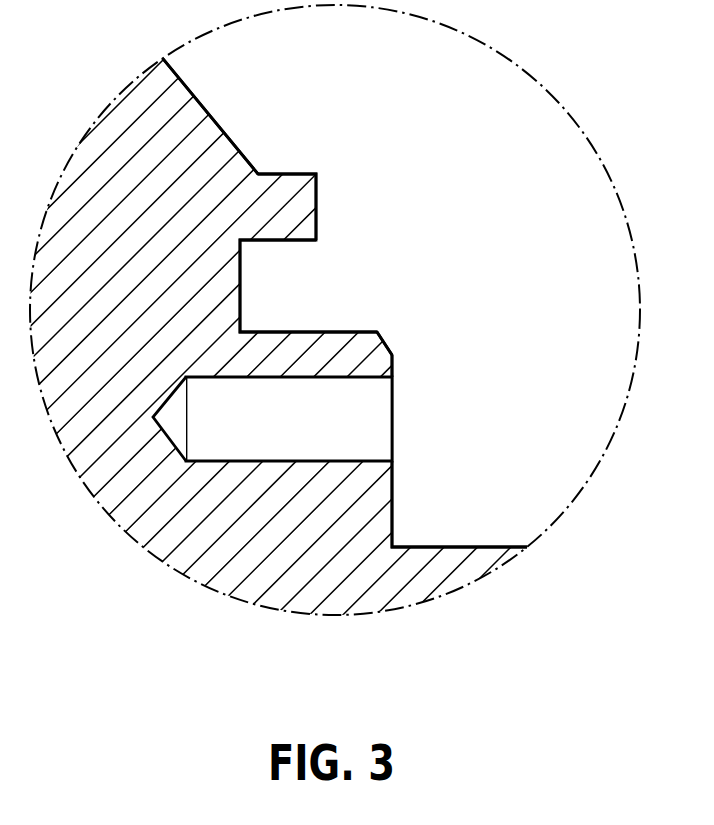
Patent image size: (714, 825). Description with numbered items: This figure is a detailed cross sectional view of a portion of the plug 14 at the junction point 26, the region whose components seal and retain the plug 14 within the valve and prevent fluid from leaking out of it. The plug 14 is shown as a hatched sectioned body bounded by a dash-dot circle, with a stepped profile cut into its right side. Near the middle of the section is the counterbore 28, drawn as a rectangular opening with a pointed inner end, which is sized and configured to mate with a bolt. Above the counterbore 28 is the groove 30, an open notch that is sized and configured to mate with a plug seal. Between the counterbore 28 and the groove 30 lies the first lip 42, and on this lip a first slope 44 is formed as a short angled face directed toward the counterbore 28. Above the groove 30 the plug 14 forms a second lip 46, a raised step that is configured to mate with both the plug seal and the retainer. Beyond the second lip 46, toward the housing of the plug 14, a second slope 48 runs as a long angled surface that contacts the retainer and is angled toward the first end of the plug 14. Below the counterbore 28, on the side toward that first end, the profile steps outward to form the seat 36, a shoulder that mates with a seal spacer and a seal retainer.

The plug 14 is at (260, 600).
The junction point 26 is at (463, 220).
The counterbore 28 is at (310, 424).
The groove 30 is at (310, 292).
The seat 36 is at (402, 538).
The first lip 42 is at (383, 362).
The first slope 44 is at (382, 342).
The second lip 46 is at (298, 200).
The second slope 48 is at (225, 136).